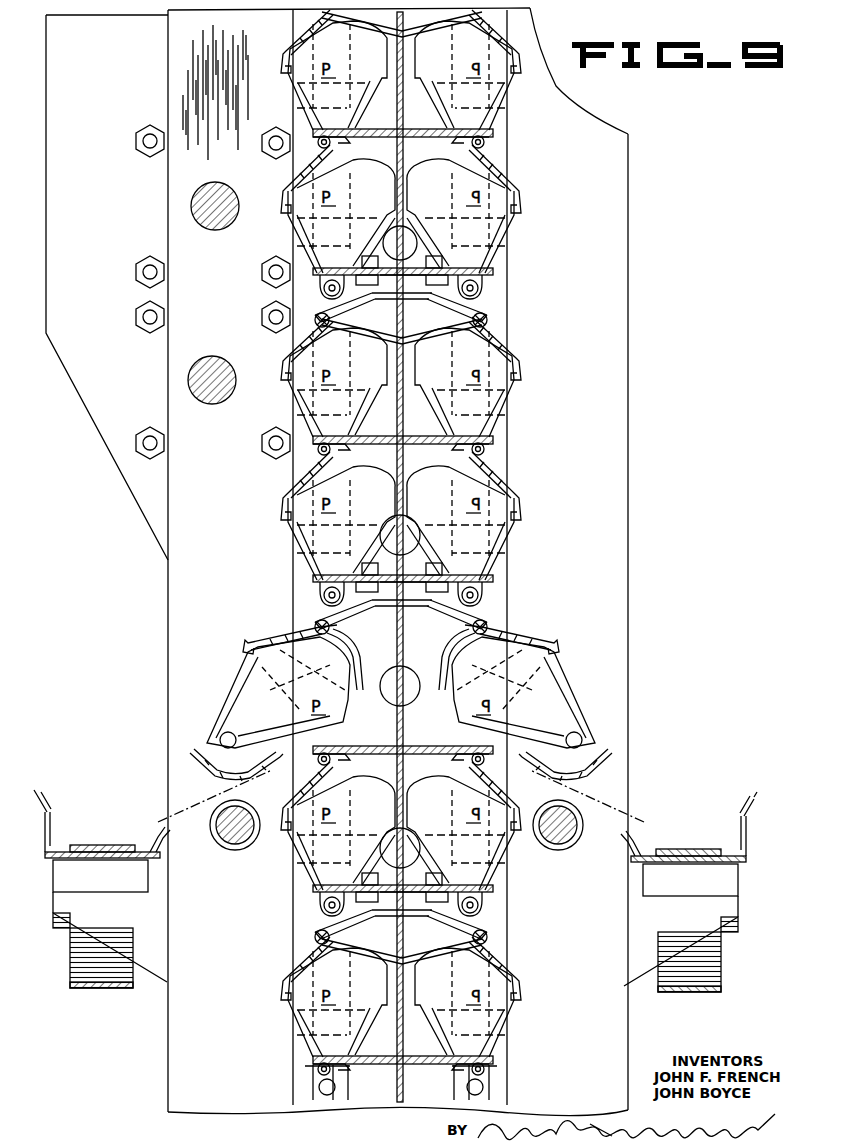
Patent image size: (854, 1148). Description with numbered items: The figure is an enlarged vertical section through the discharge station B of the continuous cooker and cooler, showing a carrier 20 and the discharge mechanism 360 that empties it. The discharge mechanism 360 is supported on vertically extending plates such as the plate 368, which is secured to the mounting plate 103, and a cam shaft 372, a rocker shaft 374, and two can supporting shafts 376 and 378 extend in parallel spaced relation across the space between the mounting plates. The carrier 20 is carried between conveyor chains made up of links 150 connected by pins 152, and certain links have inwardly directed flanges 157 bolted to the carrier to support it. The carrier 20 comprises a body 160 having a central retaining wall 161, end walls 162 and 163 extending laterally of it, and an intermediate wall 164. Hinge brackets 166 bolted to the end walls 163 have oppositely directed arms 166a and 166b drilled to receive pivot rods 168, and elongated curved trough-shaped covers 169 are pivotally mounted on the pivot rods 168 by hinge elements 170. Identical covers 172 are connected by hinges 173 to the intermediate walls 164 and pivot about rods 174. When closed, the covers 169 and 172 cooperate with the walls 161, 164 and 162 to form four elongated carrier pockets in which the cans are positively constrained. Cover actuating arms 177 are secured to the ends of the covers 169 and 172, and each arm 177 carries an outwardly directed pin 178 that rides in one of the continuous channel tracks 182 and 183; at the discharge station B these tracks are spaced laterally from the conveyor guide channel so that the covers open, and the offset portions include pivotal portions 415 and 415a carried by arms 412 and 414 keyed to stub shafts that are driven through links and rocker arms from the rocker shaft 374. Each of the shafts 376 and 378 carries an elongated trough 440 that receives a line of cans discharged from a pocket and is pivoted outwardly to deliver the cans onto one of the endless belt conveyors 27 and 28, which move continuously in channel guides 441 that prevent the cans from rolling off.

The carrier 20 is at (543, 174).
The discharge conveyor 27 is at (117, 822).
The discharge conveyor 28 is at (705, 847).
The mounting plate 103 is at (222, 489).
The link 150 is at (412, 1087).
The pin 152 is at (403, 530).
The inwardly directed flange 157 is at (423, 275).
The body 160 is at (415, 226).
The central retaining wall 161 is at (398, 200).
The end wall 162 is at (423, 273).
The end wall 163 is at (372, 25).
The intermediate wall 164 is at (470, 133).
The hinge bracket 166 is at (410, 318).
The arm 166a is at (317, 937).
The arm 166b is at (480, 322).
The pivot rod 168 is at (323, 325).
The cover 169 is at (410, 30).
The hinge element 170 is at (293, 342).
The cover 172 is at (284, 182).
The hinge 173 is at (300, 160).
The rod 174 is at (321, 145).
The cover actuating arm 177 is at (293, 85).
The pin 178 is at (333, 279).
The channel track 182 is at (523, 513).
The channel track 183 is at (287, 510).
The discharge mechanism 360 is at (647, 241).
The plate 368 is at (118, 197).
The cam shaft 372 is at (222, 228).
The rocker shaft 374 is at (215, 368).
The can supporting shaft 376 is at (230, 817).
The can supporting shaft 378 is at (562, 822).
The arm 412 is at (246, 647).
The arm 414 is at (523, 627).
The short portion of channel track 415 is at (232, 683).
The short portion of channel track 415a is at (594, 744).
The trough 440 is at (192, 755).
The channel guide 441 is at (50, 815).
The discharge station B is at (651, 366).